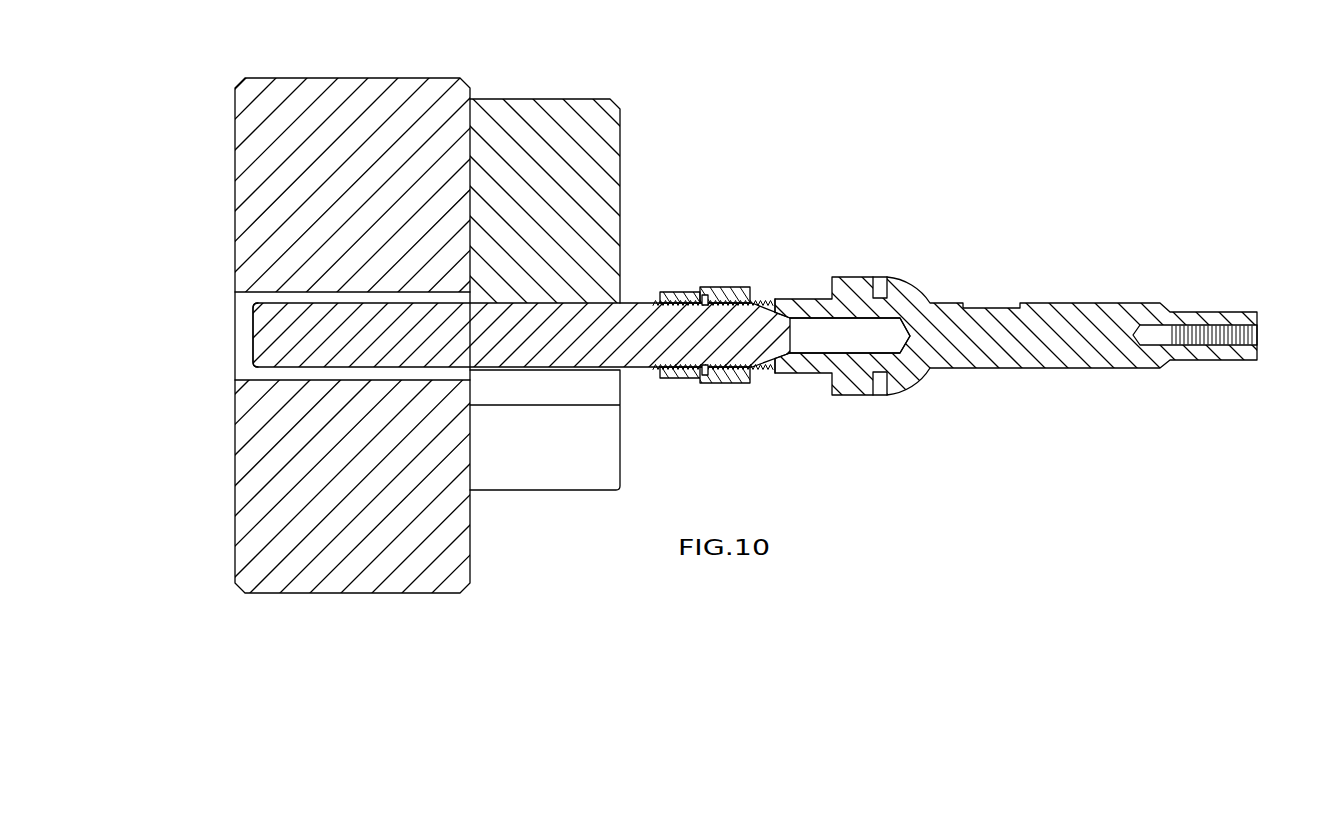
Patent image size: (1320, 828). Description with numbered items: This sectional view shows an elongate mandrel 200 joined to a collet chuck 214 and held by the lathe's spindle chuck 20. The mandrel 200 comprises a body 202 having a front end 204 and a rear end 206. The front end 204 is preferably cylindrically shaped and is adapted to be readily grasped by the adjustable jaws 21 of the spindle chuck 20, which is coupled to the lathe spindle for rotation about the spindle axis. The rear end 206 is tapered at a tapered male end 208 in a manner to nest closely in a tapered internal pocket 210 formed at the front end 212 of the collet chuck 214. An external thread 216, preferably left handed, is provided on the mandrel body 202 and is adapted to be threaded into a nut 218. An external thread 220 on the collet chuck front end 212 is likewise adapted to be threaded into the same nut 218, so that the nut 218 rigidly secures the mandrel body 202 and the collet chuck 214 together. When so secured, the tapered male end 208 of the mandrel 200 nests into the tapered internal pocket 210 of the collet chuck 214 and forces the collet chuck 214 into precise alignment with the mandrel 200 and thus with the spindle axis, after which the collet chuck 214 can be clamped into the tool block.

The spindle chuck 20 is at (330, 583).
The adjustable jaws 21 is at (535, 482).
The elongate mandrel 200 is at (516, 289).
The body 202 is at (433, 343).
The front end 204 is at (253, 350).
The rear end 206 is at (790, 342).
The tapered male end 208 is at (766, 298).
The tapered internal pocket 210 is at (778, 304).
The front end of collet chuck 212 is at (855, 441).
The collet chuck 214 is at (976, 349).
The external thread 216 is at (650, 296).
The nut 218 is at (702, 290).
The external thread 220 is at (765, 372).